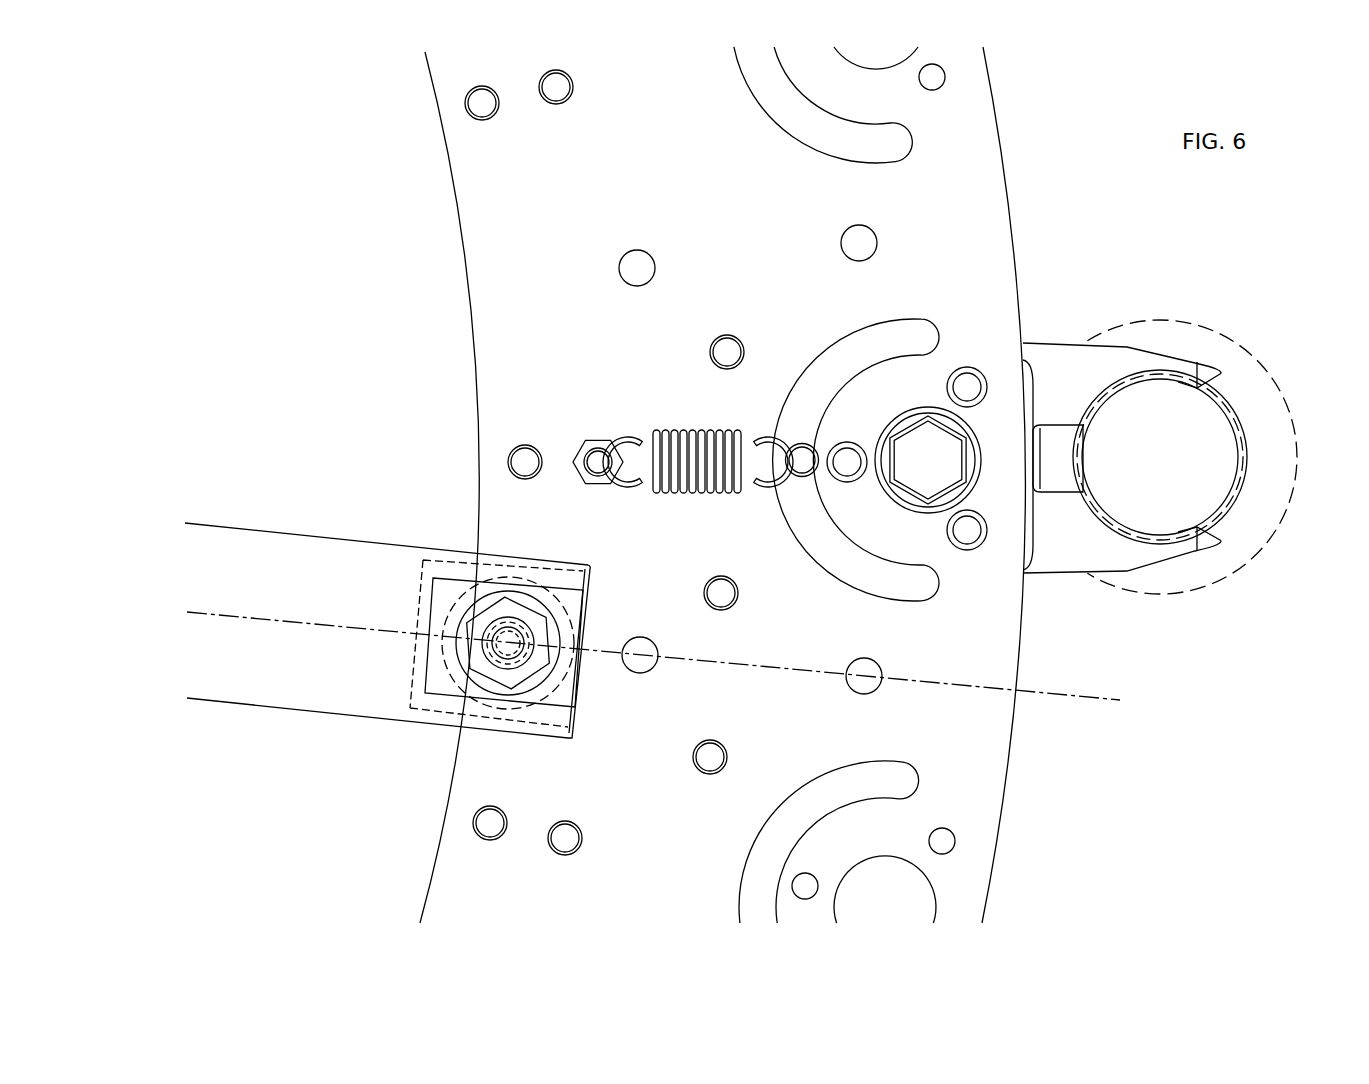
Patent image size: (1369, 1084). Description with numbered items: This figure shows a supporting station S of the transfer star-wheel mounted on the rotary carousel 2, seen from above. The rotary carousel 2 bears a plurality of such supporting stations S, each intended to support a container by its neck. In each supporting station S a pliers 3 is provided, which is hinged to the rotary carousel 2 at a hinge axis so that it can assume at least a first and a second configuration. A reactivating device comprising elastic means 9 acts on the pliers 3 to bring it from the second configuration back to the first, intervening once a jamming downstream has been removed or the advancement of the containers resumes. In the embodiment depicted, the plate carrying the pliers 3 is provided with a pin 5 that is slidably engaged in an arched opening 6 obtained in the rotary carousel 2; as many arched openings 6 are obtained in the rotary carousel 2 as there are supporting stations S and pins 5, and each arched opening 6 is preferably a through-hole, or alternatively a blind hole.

The rotary carousel 2 is at (997, 653).
The pliers 3 is at (1075, 362).
The pin 5 is at (805, 458).
The arched opening 6 is at (813, 133).
The elastic means 9 is at (692, 478).
The supporting station S is at (1257, 323).